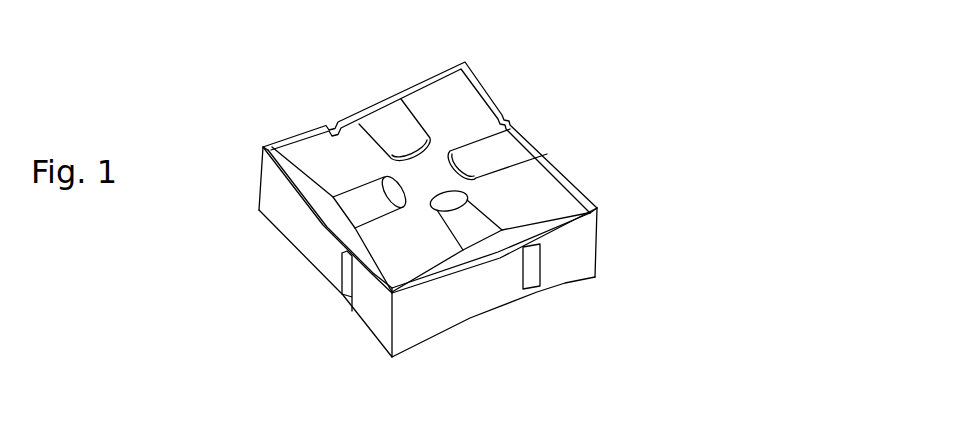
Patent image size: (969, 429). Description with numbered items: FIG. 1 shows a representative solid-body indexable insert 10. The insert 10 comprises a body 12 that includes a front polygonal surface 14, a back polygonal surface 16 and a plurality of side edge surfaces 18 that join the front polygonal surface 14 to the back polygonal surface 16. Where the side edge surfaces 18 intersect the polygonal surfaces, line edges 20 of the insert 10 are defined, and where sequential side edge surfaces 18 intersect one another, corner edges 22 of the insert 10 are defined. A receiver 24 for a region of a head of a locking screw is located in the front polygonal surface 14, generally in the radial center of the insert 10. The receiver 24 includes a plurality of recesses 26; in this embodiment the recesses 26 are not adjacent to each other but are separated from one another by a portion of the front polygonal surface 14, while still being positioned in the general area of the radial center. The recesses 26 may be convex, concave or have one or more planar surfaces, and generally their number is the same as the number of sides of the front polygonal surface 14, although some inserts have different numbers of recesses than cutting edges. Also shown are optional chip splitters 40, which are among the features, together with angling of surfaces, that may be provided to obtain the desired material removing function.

The indexable insert 10 is at (592, 38).
The body 12 is at (533, 192).
The front polygonal surface 14 is at (300, 138).
The back polygonal surface 16 is at (410, 365).
The side edge surfaces 18 is at (442, 50).
The line edges 20 is at (407, 79).
The corner edges 22 is at (258, 172).
The receiver 24 is at (442, 136).
The recesses 26 is at (386, 128).
The chip splitters 40 is at (327, 123).